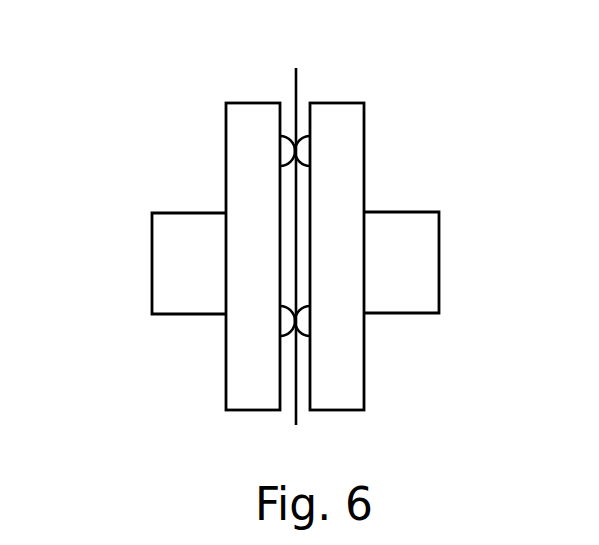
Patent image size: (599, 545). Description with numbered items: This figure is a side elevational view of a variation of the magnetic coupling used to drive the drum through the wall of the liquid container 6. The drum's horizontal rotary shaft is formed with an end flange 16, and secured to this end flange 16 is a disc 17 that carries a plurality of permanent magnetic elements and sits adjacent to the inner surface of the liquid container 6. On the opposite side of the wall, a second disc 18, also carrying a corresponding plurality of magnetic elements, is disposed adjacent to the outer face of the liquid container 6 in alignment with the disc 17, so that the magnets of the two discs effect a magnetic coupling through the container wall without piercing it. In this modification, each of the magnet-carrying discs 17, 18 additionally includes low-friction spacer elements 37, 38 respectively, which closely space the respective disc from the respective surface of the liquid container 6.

The liquid container 6 is at (292, 87).
The end flange 16 is at (182, 280).
The disc 17 is at (240, 120).
The second disc 18 is at (352, 127).
The low-friction spacer elements 37 is at (280, 148).
The low-friction spacer elements 38 is at (310, 151).